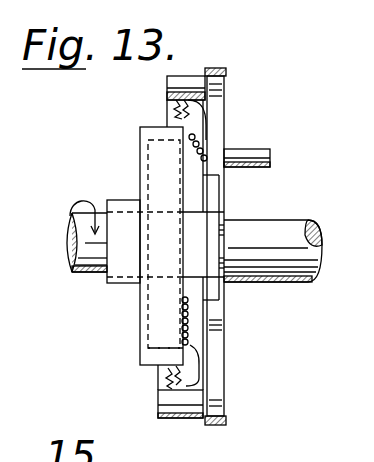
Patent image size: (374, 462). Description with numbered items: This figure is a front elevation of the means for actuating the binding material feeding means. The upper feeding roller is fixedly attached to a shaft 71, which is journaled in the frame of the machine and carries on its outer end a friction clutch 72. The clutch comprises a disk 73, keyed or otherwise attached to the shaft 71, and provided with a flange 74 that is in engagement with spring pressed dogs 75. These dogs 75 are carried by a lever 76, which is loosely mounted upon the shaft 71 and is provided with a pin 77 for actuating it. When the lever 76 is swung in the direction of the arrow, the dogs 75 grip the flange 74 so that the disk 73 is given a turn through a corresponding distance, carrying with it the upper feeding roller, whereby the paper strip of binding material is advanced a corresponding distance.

The shaft 71 is at (290, 242).
The friction clutch 72 is at (165, 245).
The disk 73 is at (140, 312).
The flange 74 is at (147, 362).
The spring pressed dogs 75 is at (172, 118).
The lever 76 is at (213, 190).
The pin 77 is at (251, 157).